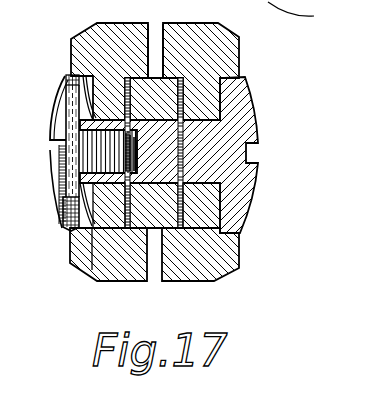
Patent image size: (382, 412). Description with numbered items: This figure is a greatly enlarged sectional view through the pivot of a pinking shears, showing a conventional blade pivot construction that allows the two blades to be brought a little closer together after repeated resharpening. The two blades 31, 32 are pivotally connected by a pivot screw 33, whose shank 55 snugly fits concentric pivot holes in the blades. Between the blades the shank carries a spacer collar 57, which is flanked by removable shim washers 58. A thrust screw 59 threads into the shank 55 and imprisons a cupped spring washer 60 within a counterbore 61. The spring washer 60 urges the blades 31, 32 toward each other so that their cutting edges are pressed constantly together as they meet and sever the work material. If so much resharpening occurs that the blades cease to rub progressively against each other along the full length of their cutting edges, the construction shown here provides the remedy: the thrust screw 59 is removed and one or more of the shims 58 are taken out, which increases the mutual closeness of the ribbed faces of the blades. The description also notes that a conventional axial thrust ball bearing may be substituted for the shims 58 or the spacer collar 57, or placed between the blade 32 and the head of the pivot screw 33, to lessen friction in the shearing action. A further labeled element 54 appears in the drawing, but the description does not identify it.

The blade 31 is at (80, 266).
The blade 32 is at (224, 256).
The pivot screw 33 is at (249, 137).
The feet 54 is at (134, 282).
The shank 55 is at (107, 281).
The spacer collar 57 is at (158, 80).
The shim washers 58 is at (115, 68).
The thrust screw 59 is at (57, 200).
The cupped spring washer 60 is at (90, 244).
The counterbore 61 is at (65, 80).